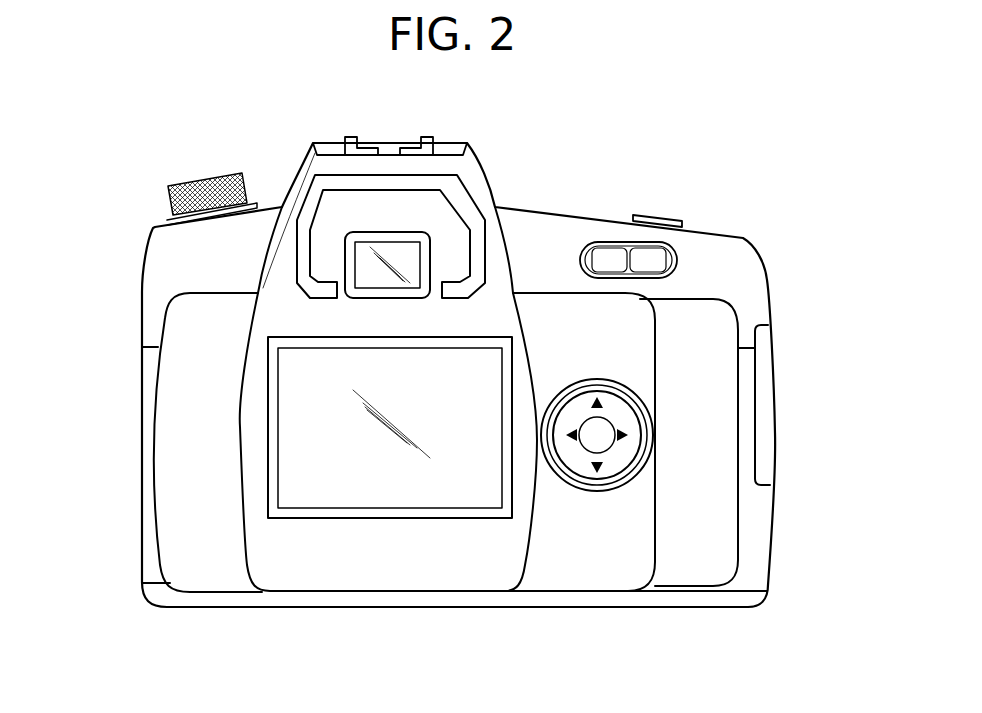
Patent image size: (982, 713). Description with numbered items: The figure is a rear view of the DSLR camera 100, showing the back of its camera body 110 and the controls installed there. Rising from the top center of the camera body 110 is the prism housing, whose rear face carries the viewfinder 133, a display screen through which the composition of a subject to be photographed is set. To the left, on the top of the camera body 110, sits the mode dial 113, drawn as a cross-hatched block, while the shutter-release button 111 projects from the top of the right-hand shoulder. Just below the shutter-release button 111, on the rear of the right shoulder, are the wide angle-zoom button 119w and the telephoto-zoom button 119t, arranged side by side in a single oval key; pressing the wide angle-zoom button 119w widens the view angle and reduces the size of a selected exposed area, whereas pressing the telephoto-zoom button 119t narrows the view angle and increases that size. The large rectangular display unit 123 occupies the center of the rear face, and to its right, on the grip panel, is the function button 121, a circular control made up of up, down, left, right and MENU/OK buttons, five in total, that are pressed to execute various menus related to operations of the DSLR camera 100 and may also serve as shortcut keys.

The DSLR camera 100 is at (740, 117).
The camera body 110 is at (768, 228).
The shutter-release button 111 is at (662, 214).
The mode dial 113 is at (210, 183).
The wide angle-zoom button 119w is at (628, 260).
The telephoto-zoom button 119t is at (648, 260).
The function button 121 is at (648, 432).
The display unit 123 is at (300, 433).
The viewfinder 133 is at (408, 257).